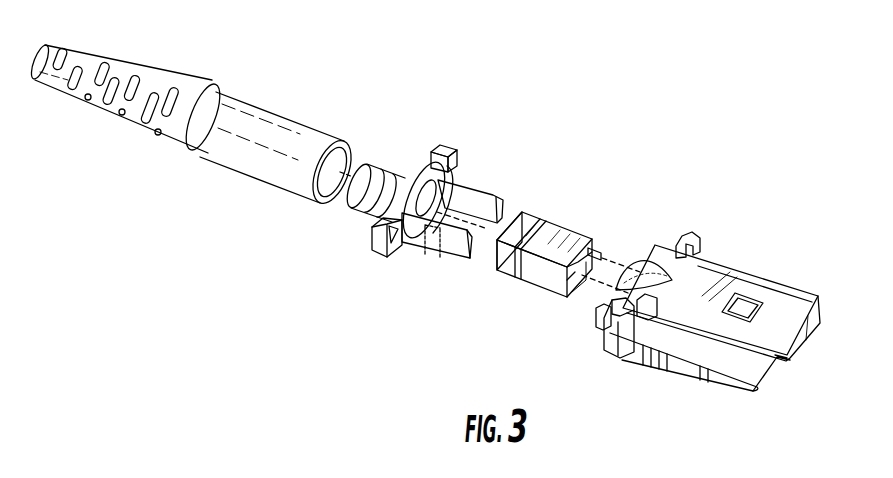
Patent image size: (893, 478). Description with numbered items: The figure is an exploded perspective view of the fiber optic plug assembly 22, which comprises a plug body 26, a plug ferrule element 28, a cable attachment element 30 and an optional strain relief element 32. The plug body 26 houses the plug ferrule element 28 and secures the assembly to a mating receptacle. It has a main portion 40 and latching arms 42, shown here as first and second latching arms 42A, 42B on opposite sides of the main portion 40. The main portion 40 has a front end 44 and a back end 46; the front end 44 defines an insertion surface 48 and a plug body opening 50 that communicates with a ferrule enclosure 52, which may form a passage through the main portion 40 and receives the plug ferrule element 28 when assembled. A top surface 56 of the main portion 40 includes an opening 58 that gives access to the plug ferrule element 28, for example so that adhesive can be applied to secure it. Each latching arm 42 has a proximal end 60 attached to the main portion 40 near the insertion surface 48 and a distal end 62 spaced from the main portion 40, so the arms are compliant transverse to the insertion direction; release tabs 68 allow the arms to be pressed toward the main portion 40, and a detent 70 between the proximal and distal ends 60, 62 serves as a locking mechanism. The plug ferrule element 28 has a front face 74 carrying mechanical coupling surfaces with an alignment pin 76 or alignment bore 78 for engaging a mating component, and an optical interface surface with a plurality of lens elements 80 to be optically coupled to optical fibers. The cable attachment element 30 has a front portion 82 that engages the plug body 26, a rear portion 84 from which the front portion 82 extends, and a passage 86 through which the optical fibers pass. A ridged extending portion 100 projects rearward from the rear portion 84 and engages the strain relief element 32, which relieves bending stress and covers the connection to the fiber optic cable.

The fiber optic plug assembly 22 is at (556, 100).
The plug body 26 is at (692, 226).
The plug ferrule element 28 is at (554, 212).
The cable attachment element 30 is at (437, 141).
The strain relief element 32 is at (263, 103).
The main portion 40 is at (716, 277).
The latching arm 42 is at (692, 308).
The first latching arm 42A is at (700, 378).
The second latching arm 42B is at (788, 277).
The front end 44 is at (798, 304).
The back end 46 is at (641, 257).
The insertion surface 48 is at (801, 344).
The plug body opening 50 is at (762, 380).
The ferrule enclosure 52 is at (781, 360).
The top surface 56 is at (697, 298).
The opening 58 is at (745, 290).
The proximal end 60 is at (757, 390).
The distal end 62 is at (598, 330).
The release tab 68 is at (615, 355).
The detent 70 is at (658, 368).
The front face 74 is at (578, 257).
The alignment pin 76 is at (597, 249).
The alignment bore 78 is at (563, 283).
The lens elements 80 is at (580, 268).
The front portion 82 is at (432, 254).
The rear portion 84 is at (380, 254).
The passage 86 is at (428, 192).
The extending portion 100 is at (363, 211).